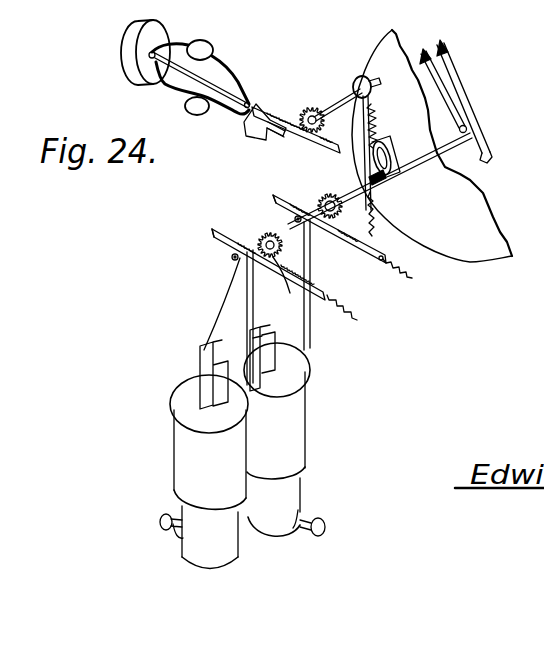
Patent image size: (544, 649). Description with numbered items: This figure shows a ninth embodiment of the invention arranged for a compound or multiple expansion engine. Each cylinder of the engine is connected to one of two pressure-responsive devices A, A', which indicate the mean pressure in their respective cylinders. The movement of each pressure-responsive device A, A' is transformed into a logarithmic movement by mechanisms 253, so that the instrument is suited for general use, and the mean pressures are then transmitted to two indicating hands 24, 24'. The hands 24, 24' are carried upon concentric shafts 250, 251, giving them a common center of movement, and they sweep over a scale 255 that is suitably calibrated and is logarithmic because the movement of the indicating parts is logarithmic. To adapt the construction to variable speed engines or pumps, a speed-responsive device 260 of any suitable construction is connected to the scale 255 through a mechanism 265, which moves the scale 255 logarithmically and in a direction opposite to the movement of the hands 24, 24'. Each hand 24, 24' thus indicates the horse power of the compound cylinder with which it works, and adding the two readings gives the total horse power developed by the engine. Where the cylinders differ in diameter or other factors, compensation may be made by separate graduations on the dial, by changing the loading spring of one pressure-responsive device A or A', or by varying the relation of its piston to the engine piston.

The speed-responsive device 260 is at (185, 67).
The mechanism 265 is at (312, 143).
The indicating hand 24 is at (476, 101).
The indicating hand 24' is at (456, 91).
The concentric shaft 251 is at (470, 178).
The scale 255 is at (474, 256).
The concentric shaft 250 is at (277, 208).
The mechanism 253 is at (287, 299).
The pressure-responsive device A is at (189, 472).
The pressure-responsive device A' is at (289, 439).